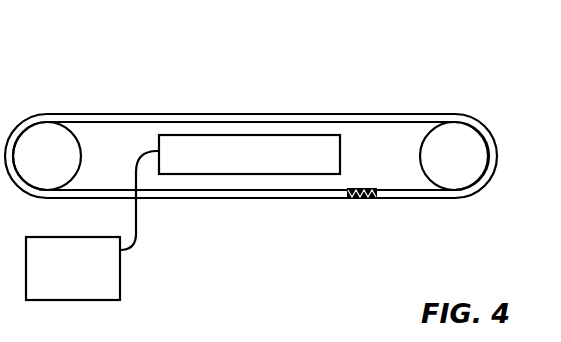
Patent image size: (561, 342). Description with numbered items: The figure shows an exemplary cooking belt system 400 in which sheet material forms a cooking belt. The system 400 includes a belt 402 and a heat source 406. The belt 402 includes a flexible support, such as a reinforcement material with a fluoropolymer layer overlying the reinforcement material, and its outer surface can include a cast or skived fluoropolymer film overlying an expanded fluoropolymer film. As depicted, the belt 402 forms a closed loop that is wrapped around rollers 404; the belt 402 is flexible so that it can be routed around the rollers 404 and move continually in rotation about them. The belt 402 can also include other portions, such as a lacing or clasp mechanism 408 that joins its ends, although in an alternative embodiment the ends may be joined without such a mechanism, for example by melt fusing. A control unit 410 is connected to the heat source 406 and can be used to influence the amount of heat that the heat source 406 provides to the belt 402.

The system 400 is at (270, 63).
The belt 402 is at (203, 198).
The rollers 404 is at (445, 160).
The heat source 406 is at (249, 154).
The lacing or clasp mechanism 408 is at (363, 199).
The control unit 410 is at (92, 225).